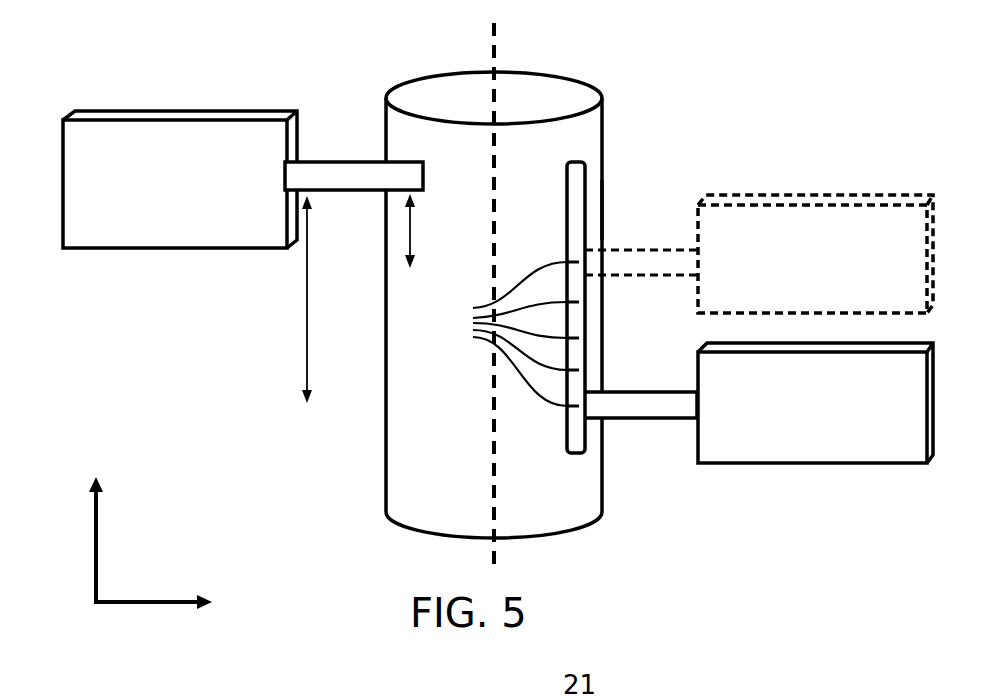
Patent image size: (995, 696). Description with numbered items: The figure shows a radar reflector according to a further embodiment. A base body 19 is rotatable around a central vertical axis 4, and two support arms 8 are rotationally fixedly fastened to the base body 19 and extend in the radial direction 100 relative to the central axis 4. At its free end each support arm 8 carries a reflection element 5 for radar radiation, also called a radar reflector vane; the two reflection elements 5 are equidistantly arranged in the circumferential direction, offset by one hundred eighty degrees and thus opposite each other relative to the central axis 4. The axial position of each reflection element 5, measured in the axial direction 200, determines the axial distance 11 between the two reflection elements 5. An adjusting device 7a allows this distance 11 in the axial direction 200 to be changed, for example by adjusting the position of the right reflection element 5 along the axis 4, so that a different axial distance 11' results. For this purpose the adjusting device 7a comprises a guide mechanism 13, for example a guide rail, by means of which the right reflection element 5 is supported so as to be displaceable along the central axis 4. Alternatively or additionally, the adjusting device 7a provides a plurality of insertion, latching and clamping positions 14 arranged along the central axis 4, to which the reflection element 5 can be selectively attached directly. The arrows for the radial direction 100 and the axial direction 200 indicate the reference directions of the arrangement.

The central vertical axis 4 is at (497, 87).
The base body 19 is at (585, 135).
The reflection element 5 is at (160, 230).
The support arm 8 is at (305, 162).
The guide mechanism 13 is at (577, 433).
The adjusting device 7a is at (602, 207).
The insertion, latching and clamping positions 14 is at (507, 334).
The axial distance 11 is at (262, 299).
The changed axial distance 11' is at (375, 231).
The axial direction 200 is at (97, 537).
The radial direction 100 is at (157, 605).